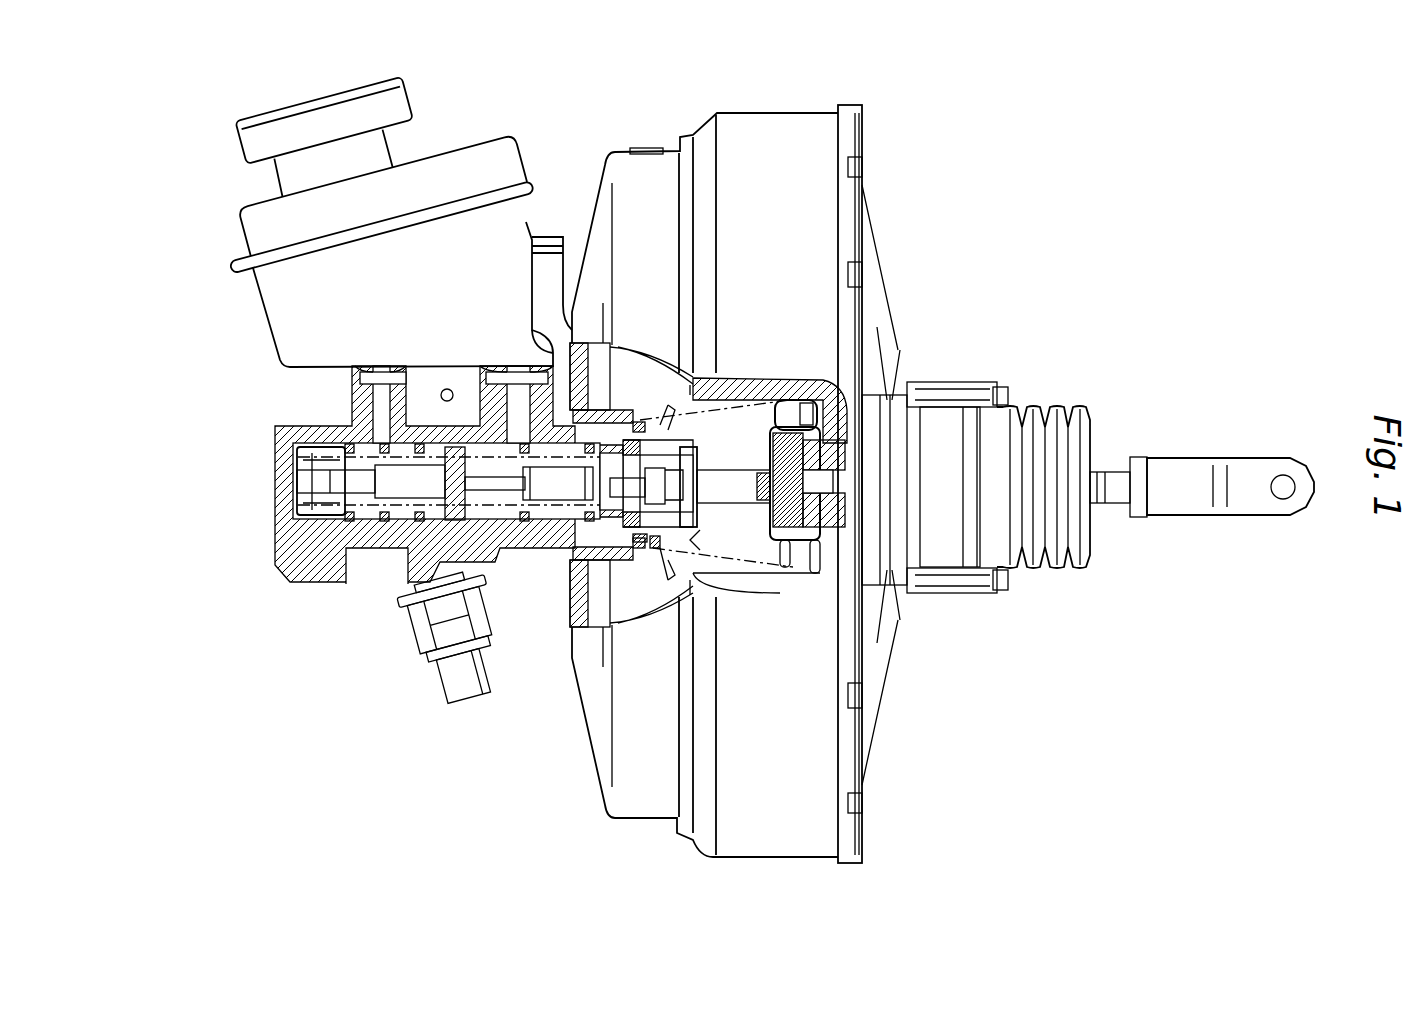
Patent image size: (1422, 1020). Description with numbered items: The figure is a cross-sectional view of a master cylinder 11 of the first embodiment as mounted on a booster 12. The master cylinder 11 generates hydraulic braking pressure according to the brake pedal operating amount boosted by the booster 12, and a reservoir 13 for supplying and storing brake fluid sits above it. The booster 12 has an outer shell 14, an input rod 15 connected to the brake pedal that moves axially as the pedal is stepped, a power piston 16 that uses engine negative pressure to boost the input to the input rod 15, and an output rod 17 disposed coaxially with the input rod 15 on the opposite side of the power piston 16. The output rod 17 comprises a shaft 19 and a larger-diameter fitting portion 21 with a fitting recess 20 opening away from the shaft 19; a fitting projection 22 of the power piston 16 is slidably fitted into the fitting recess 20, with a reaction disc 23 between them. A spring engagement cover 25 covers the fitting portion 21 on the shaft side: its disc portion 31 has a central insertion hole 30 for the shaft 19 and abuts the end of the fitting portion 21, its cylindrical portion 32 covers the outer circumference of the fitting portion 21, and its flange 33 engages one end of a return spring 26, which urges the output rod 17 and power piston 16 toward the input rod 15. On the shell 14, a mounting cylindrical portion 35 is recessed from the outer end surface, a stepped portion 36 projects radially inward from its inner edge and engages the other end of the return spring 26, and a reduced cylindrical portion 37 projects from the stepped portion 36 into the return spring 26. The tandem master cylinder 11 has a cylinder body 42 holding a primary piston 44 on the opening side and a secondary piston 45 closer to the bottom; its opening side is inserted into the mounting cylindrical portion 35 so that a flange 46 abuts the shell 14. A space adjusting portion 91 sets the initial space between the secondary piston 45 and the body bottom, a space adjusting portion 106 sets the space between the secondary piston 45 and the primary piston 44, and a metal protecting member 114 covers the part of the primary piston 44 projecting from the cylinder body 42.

The master cylinder 11 is at (468, 537).
The booster 12 is at (930, 476).
The reservoir 13 is at (230, 142).
The outer shell 14 is at (750, 113).
The input rod 15 is at (1186, 465).
The power piston 16 is at (818, 385).
The output rod 17 is at (822, 582).
The shaft 19 is at (752, 517).
The fitting recess 20 is at (950, 578).
The fitting portion 21 is at (824, 545).
The fitting projection 22 is at (933, 400).
The reaction disc 23 is at (900, 385).
The spring engagement cover 25 is at (770, 468).
The return spring 26 is at (817, 562).
The insertion hole 30 is at (690, 378).
The disc portion 31 is at (735, 380).
The cylindrical portion 32 is at (779, 418).
The flange 33 is at (876, 350).
The mounting cylindrical portion 35 is at (650, 552).
The stepped portion 36 is at (658, 560).
The reduced cylindrical portion 37 is at (665, 575).
The cylinder body 42 is at (270, 421).
The primary piston 44 is at (557, 539).
The secondary piston 45 is at (382, 539).
The flange 46 is at (638, 547).
The space adjusting portion 91 is at (314, 521).
The space adjusting portion 106 is at (495, 524).
The metal protecting member 114 is at (697, 537).